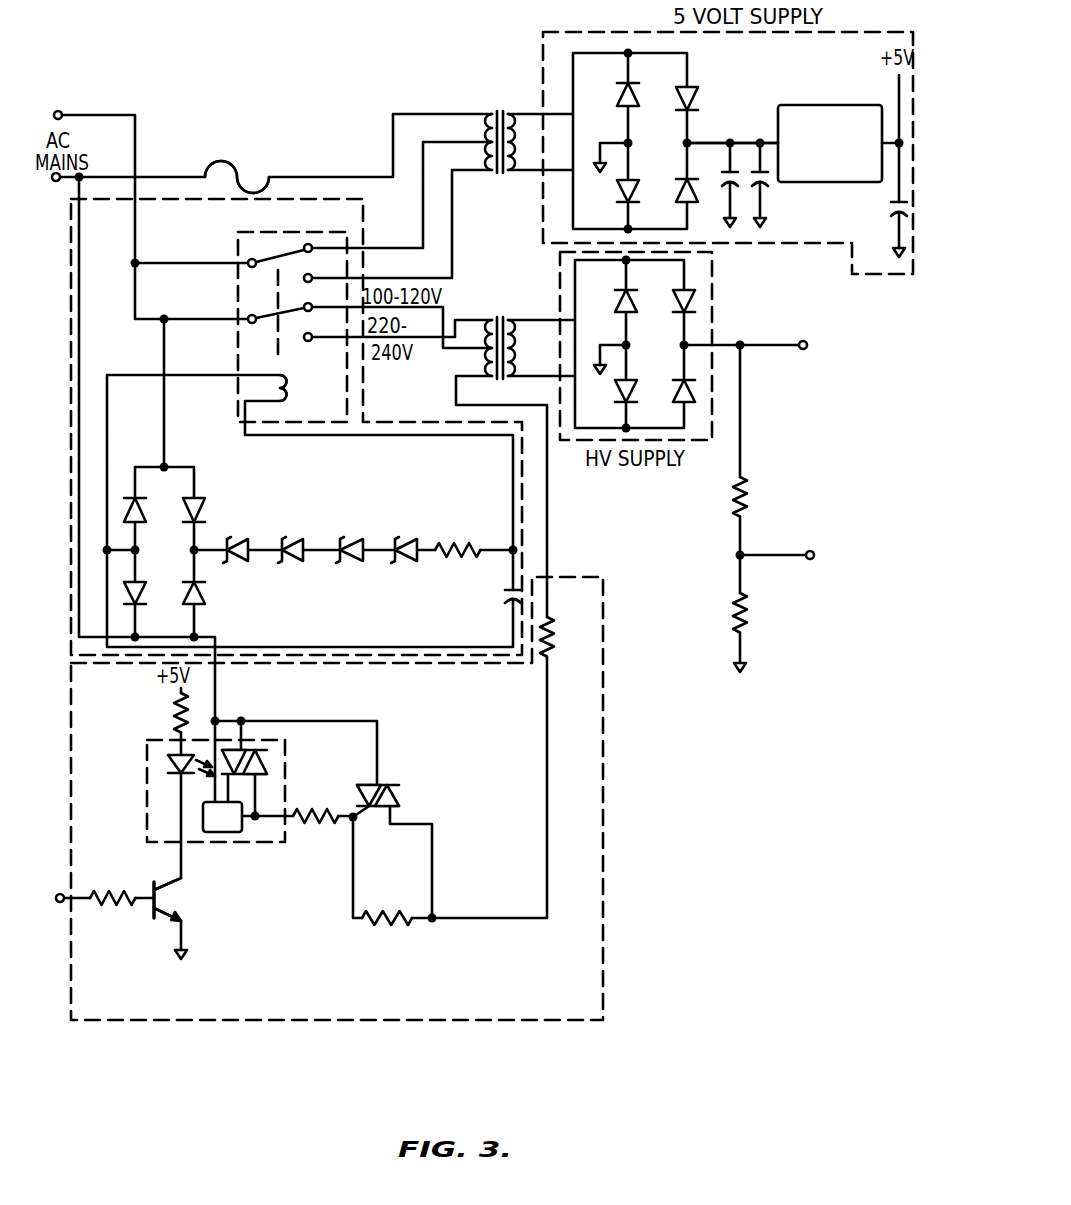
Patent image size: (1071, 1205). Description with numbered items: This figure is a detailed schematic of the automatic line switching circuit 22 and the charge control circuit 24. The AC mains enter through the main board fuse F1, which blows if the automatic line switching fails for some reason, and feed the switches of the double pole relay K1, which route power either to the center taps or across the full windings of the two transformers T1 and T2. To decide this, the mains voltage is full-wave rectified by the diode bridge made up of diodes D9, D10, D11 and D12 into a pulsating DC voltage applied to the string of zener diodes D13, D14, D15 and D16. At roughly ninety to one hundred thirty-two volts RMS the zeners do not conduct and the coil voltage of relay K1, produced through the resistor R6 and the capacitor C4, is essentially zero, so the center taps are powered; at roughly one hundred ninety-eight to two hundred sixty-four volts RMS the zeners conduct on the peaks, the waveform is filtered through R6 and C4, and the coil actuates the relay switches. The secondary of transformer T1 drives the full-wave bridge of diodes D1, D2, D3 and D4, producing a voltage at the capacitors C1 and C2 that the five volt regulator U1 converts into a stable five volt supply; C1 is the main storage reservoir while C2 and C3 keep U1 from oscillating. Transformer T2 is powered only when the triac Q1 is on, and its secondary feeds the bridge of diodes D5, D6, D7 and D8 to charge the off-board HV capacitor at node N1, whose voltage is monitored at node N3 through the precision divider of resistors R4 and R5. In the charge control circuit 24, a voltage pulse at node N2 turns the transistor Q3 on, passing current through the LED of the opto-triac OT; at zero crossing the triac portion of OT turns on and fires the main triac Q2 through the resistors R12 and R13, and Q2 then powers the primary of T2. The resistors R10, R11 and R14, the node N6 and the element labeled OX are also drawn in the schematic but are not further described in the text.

The automatic line switching circuit 22 is at (70, 439).
The charge control circuit 24 is at (407, 1022).
The main board fuse F1 is at (237, 166).
The double pole relay K1 is at (292, 315).
The transformer T1 is at (500, 130).
The transformer T2 is at (500, 336).
The diode D1 is at (615, 96).
The diode D2 is at (674, 97).
The diode D3 is at (615, 190).
The diode D4 is at (674, 190).
The diode D5 is at (612, 302).
The diode D6 is at (671, 302).
The diode D7 is at (613, 392).
The diode D8 is at (671, 392).
The diode D9 is at (148, 512).
The diode D10 is at (210, 510).
The diode D11 is at (149, 595).
The diode D12 is at (210, 596).
The zener diode D13 is at (245, 537).
The zener diode D14 is at (295, 537).
The zener diode D15 is at (354, 537).
The zener diode D16 is at (409, 537).
The five volt regulator U1 is at (830, 131).
The node N6 is at (732, 129).
The capacitor C1 is at (737, 192).
The capacitor C2 is at (768, 192).
The capacitor C3 is at (884, 209).
The capacitor C4 is at (501, 600).
The node N1 is at (818, 346).
The node N3 is at (825, 556).
The resistor R4 is at (755, 497).
The resistor R5 is at (756, 613).
The resistor R6 is at (458, 536).
The resistor R14 is at (562, 638).
The resistor R10 is at (162, 713).
The opto-triac OT is at (216, 791).
The triac Q1 is at (259, 763).
The opto-triac output OX is at (222, 817).
The resistor R12 is at (316, 832).
The main triac Q2 is at (395, 797).
The resistor R13 is at (387, 934).
The transistor Q3 is at (176, 899).
The resistor R11 is at (113, 914).
The node N2 is at (52, 885).